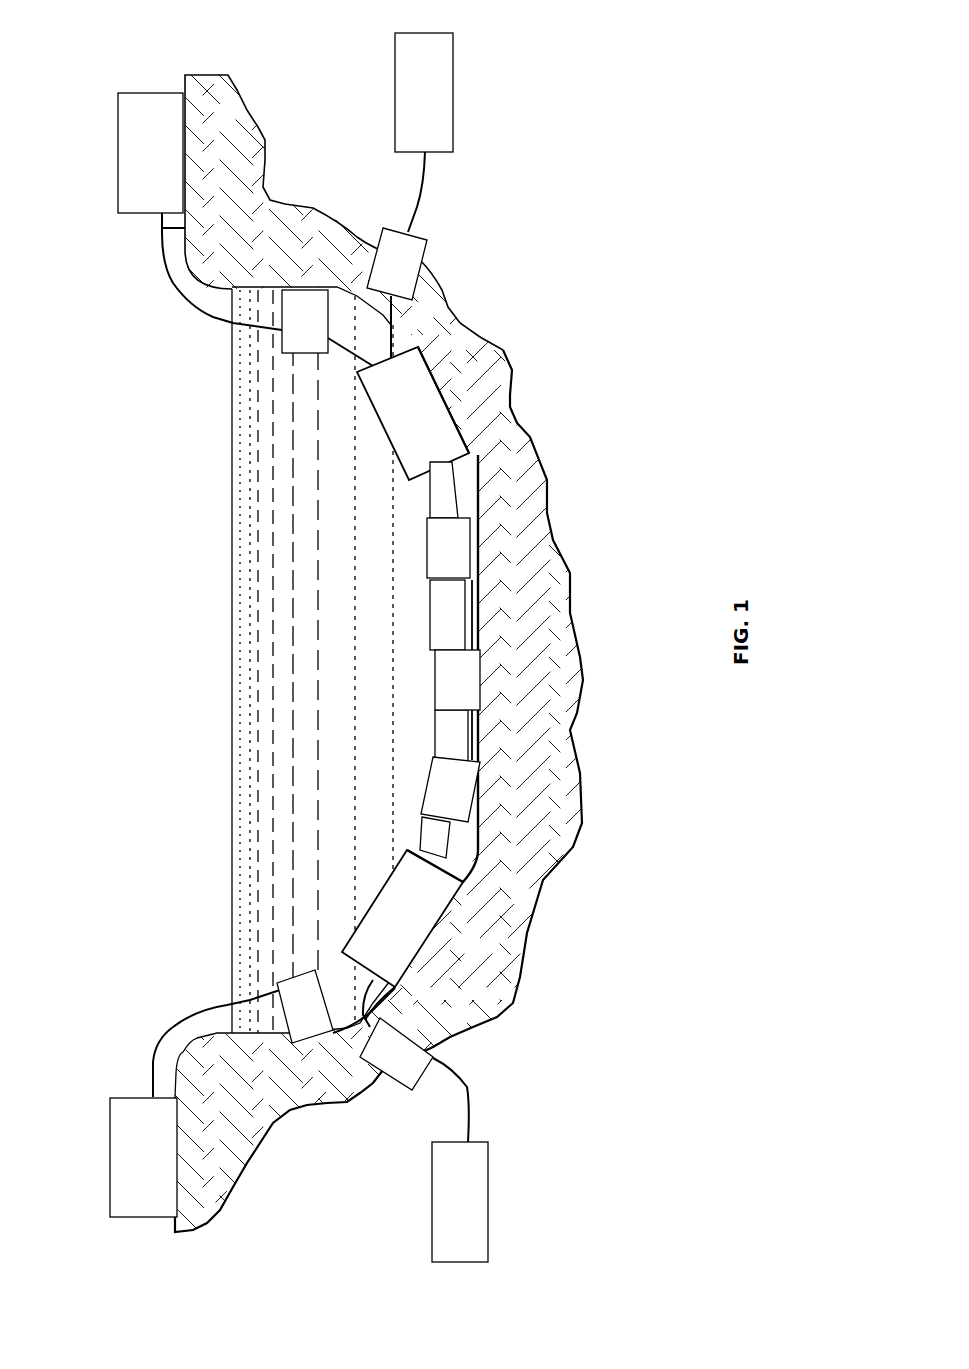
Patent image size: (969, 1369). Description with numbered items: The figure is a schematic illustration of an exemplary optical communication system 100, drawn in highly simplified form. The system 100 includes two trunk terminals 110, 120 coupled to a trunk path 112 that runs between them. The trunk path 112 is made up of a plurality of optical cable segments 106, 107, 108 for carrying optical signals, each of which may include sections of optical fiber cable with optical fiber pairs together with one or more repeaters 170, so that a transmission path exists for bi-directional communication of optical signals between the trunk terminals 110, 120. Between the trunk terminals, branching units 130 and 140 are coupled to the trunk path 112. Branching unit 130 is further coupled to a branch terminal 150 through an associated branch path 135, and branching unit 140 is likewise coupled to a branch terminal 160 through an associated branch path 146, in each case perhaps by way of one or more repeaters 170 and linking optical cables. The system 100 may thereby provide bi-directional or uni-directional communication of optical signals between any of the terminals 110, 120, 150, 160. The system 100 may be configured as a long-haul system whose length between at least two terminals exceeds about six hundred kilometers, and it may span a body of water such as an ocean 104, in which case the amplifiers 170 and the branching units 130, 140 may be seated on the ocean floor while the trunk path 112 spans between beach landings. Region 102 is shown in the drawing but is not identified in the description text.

The optical communication system 100 is at (127, 662).
The terrain / ground region 102 is at (480, 522).
The ocean 104 is at (232, 610).
The cable segment 106 is at (205, 1005).
The cable segment 107 is at (432, 492).
The cable segment 108 is at (205, 318).
The trunk terminal 110 is at (110, 1158).
The trunk path 112 is at (312, 706).
The trunk terminal 120 is at (118, 165).
The branching unit 130 is at (370, 895).
The branch path 135 is at (470, 1135).
The branching unit 140 is at (377, 422).
The branch path 146 is at (428, 165).
The branch terminal 150 is at (488, 1200).
The branch terminal 160 is at (453, 40).
The repeater 170 is at (390, 228).